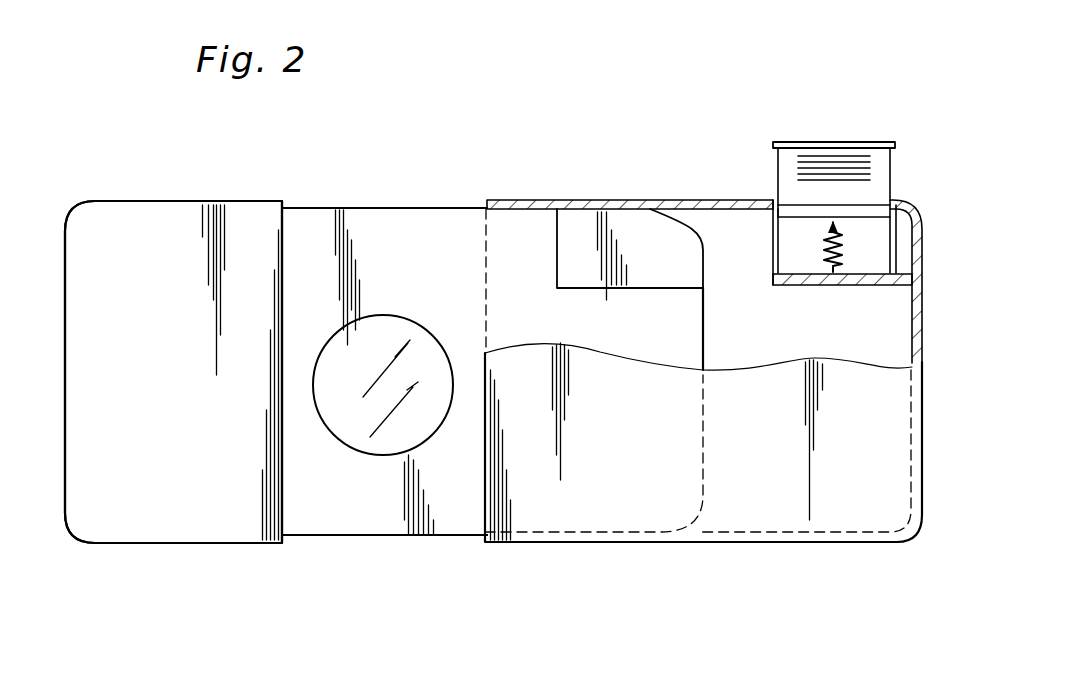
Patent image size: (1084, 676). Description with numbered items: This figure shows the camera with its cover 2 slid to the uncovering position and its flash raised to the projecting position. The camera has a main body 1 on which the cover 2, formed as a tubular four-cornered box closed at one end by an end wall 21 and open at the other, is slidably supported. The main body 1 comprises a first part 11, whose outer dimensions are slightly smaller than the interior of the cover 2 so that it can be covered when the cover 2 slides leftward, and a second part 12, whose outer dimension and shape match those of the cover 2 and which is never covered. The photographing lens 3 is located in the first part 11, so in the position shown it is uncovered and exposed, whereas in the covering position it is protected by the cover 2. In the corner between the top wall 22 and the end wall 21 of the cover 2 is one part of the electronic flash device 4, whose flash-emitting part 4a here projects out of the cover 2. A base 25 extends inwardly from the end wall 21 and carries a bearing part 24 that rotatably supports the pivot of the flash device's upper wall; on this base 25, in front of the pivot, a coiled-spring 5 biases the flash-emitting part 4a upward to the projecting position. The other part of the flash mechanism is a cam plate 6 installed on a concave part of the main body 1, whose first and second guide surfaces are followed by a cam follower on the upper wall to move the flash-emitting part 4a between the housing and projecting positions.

The main body 1 is at (194, 202).
The second part 12 is at (125, 230).
The first part 11 is at (362, 230).
The photographing lens 3 is at (387, 455).
The cover 2 is at (782, 542).
The top wall 22 is at (608, 208).
The end wall 21 is at (912, 325).
The bearing part 24 is at (773, 235).
The base 25 is at (805, 282).
The coiled-spring 5 is at (818, 253).
The electronic flash device 4 is at (775, 165).
The flash-emitting part 4a is at (875, 172).
The cam plate 6 is at (593, 240).